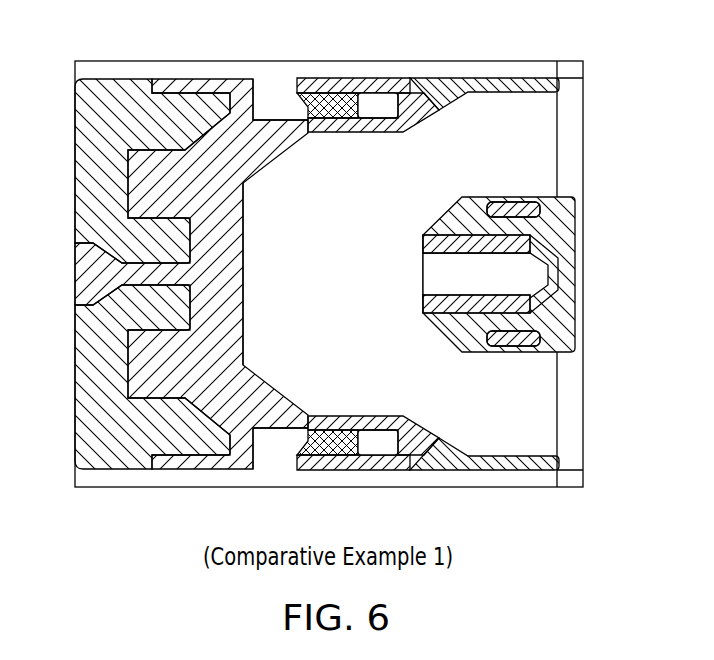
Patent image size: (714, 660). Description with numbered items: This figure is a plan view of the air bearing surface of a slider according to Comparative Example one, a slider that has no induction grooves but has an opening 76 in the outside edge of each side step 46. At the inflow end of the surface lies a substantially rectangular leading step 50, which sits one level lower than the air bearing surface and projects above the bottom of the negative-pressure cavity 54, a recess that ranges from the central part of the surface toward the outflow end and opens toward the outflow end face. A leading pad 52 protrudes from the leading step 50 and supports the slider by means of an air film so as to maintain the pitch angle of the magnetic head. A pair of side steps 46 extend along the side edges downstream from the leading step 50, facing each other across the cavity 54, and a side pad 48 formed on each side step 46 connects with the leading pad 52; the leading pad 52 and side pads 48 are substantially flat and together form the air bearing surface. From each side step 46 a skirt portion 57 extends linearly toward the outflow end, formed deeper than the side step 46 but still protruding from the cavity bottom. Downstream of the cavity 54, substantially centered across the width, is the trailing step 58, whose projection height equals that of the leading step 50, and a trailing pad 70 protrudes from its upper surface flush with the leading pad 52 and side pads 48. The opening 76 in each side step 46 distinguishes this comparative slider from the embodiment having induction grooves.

The side step 46 is at (357, 87).
The side pad 48 is at (410, 115).
The leading step 50 is at (85, 125).
The leading pad 52 is at (243, 288).
The negative-pressure cavity 54 is at (328, 313).
The skirt portion 57 is at (494, 85).
The trailing step 58 is at (570, 335).
The trailing pad 70 is at (567, 282).
The opening 76 is at (275, 87).